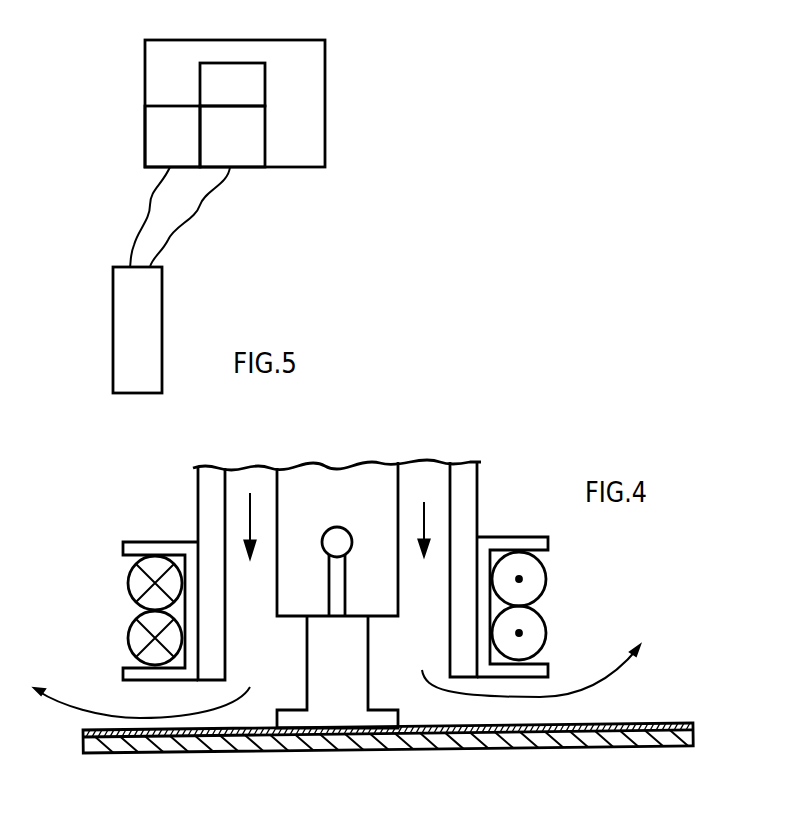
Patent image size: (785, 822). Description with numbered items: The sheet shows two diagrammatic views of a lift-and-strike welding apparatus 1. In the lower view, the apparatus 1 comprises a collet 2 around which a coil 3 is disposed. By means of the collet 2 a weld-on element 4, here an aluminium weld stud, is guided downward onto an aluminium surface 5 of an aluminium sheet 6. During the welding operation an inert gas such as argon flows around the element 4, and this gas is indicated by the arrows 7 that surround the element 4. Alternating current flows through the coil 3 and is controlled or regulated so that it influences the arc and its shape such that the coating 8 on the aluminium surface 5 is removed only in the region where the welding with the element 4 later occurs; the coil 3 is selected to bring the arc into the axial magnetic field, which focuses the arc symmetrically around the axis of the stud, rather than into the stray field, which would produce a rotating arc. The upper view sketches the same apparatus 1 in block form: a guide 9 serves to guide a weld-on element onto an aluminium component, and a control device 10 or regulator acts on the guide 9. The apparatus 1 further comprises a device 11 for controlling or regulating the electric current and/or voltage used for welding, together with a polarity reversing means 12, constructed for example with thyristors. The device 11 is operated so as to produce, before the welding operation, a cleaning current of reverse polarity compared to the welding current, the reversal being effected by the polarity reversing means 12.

In FIG. 5, the apparatus 1 is at (340, 112).
In FIG. 4, the apparatus 1 is at (113, 537).
In FIG. 4, the collet 2 is at (358, 487).
In FIG. 4, the coil 3 is at (548, 566).
In FIG. 4, the weld-on element 4 is at (377, 718).
In FIG. 4, the aluminium surface 5 is at (676, 712).
In FIG. 4, the aluminium sheet 6 is at (633, 738).
In FIG. 4, the arrows 7 is at (562, 698).
In FIG. 4, the coating 8 is at (628, 725).
In FIG. 5, the guide 9 is at (148, 304).
In FIG. 5, the control device 10 is at (160, 133).
In FIG. 5, the device 11 is at (243, 152).
In FIG. 5, the polarity reversing means 12 is at (238, 77).